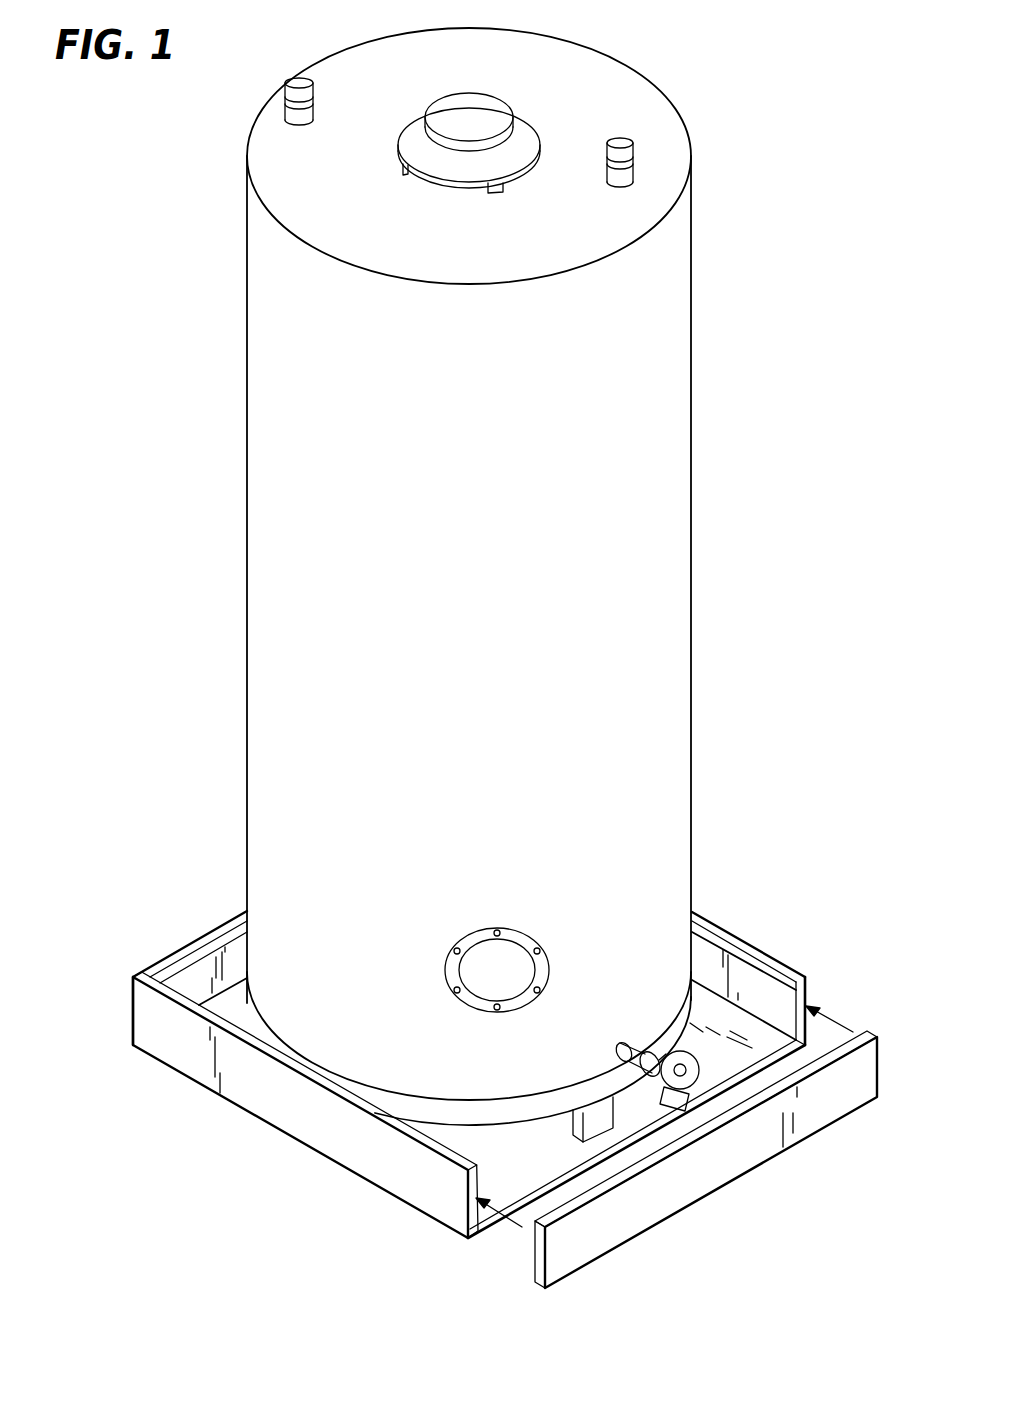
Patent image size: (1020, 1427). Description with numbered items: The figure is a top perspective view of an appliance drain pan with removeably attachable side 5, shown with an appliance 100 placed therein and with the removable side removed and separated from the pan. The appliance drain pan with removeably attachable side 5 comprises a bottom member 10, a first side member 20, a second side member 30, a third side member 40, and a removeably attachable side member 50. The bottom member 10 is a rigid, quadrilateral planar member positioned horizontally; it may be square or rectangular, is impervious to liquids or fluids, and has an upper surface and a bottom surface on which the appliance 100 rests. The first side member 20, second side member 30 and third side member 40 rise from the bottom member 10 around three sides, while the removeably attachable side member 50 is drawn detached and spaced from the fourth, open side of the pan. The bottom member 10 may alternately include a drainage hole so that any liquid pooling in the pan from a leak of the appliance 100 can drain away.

The appliance drain pan with removeably attachable side 5 is at (494, 1092).
The bottom member 10 is at (505, 1183).
The first side member 20 is at (160, 1043).
The second side member 30 is at (157, 960).
The third side member 40 is at (775, 960).
The removeably attachable side member 50 is at (730, 1170).
The appliance 100 is at (692, 500).